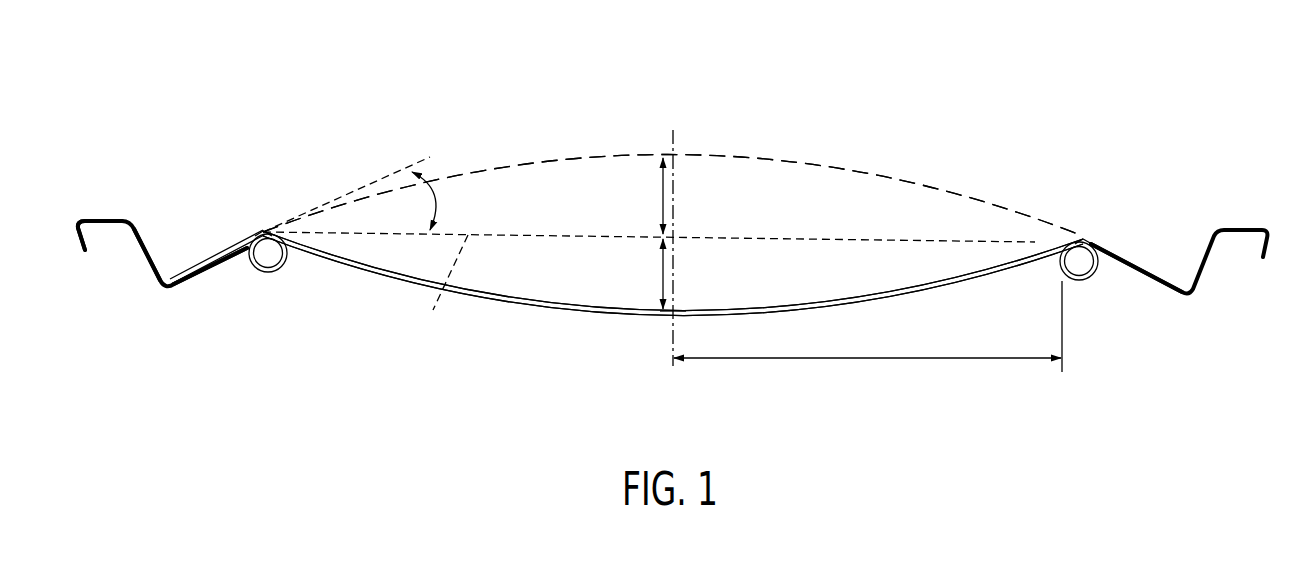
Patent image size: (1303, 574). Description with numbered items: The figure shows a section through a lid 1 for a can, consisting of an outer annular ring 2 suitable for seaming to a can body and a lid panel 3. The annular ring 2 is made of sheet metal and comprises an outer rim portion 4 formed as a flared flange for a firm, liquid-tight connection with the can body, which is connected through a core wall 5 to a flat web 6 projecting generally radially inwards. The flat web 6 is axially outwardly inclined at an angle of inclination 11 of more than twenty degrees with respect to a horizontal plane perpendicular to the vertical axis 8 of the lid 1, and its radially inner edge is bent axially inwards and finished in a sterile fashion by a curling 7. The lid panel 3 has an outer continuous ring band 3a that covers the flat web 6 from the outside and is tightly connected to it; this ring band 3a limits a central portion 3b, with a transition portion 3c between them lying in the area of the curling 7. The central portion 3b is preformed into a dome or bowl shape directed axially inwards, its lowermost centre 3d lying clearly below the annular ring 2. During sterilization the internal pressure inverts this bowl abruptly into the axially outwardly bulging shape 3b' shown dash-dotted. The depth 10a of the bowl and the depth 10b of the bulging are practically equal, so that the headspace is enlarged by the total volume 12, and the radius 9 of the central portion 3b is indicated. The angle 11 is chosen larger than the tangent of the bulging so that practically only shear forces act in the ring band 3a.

The lid 1 is at (235, 63).
The annular ring 2 is at (167, 208).
The lid panel 3 is at (915, 278).
The outer continuous ring band 3a is at (204, 257).
The central portion 3b is at (673, 295).
The outwardly bulging shape of central portion 3b' is at (673, 169).
The transition portion 3c is at (262, 227).
The lowermost centre of the panel 3d is at (668, 316).
The outer rim portion 4 is at (100, 220).
The core wall 5 is at (145, 268).
The flat web 6 is at (222, 264).
The curling 7 is at (276, 273).
The vertical axis 8 is at (675, 132).
The radius of the central portion 9 is at (845, 360).
The depth of the bowl shape 10a is at (657, 280).
The depth of the bulging 10b is at (655, 205).
The angle of inclination 11 is at (433, 183).
The total volume 12 is at (838, 178).